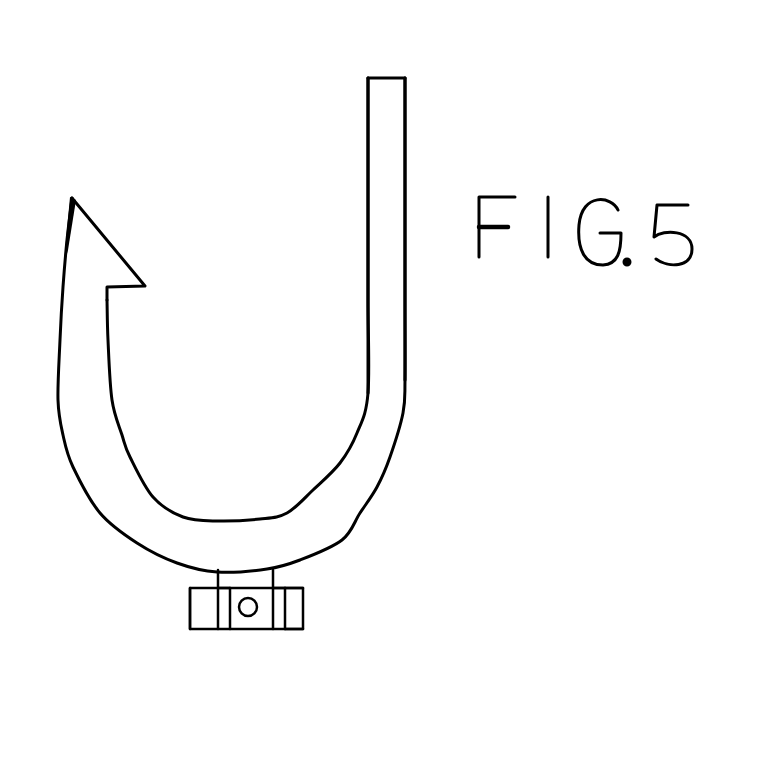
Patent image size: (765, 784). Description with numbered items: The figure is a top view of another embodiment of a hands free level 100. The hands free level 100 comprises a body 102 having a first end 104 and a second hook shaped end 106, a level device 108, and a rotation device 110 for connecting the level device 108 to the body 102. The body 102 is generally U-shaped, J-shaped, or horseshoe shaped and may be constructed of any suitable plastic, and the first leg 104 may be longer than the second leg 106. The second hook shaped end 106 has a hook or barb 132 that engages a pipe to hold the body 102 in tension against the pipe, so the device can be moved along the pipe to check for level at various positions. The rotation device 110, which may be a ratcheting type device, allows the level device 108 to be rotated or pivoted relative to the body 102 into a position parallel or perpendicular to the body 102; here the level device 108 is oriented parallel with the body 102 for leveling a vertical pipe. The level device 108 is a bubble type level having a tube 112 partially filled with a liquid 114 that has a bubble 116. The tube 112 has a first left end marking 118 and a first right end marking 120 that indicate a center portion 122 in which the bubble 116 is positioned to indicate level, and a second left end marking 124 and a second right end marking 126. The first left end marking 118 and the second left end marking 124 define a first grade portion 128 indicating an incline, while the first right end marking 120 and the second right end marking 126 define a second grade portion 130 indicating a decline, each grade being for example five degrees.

The hands free level 100 is at (194, 168).
The body 102 is at (388, 353).
The first end 104 is at (384, 64).
The second hook shaped end 106 is at (77, 188).
The level device 108 is at (274, 670).
The rotation device 110 is at (275, 577).
The tube 112 is at (303, 612).
The liquid 114 is at (290, 617).
The bubble 116 is at (248, 613).
The first left end marking 118 is at (237, 622).
The first right end marking 120 is at (262, 627).
The center portion 122 is at (240, 625).
The second left end marking 124 is at (217, 608).
The second right end marking 126 is at (278, 605).
The first grade portion 128 is at (227, 593).
The second grade portion 130 is at (272, 595).
The hook or barb 132 is at (113, 245).